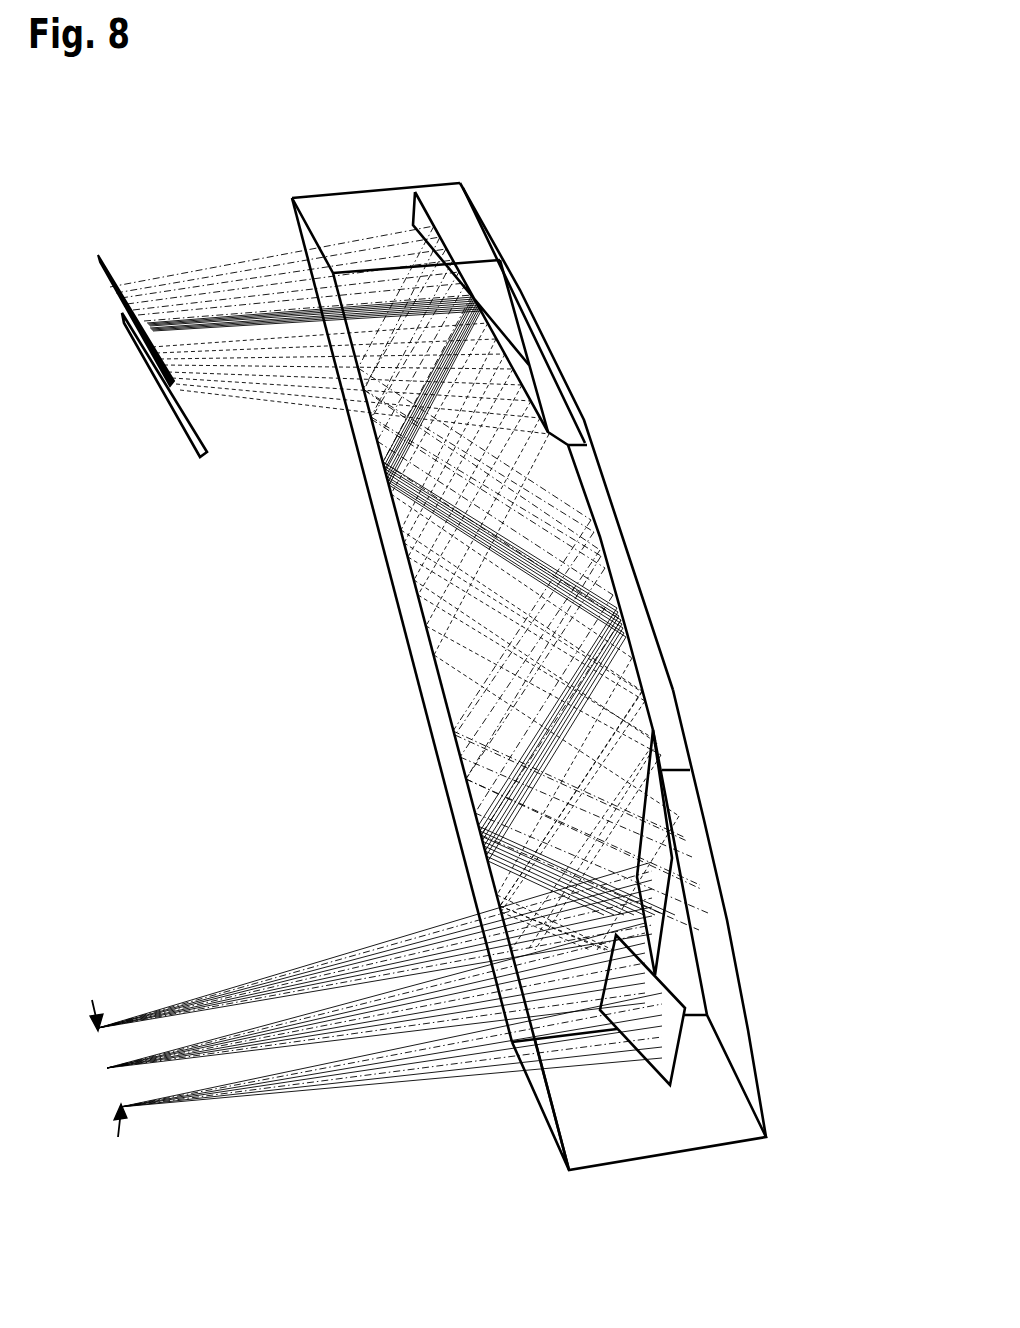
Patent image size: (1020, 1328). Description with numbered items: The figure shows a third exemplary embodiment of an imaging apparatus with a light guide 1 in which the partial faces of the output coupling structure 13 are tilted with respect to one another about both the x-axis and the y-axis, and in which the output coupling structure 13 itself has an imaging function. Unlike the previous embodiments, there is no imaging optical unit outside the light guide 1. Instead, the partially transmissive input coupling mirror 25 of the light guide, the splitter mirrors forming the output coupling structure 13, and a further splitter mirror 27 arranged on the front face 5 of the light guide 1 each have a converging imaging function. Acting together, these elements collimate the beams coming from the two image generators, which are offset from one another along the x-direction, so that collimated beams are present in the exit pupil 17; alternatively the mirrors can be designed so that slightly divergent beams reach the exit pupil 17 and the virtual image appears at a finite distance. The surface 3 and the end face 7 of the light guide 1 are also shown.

The light guide 1 is at (400, 588).
The front surface of light guide 3 is at (427, 678).
The front face 5 is at (688, 813).
The end face of light guide 7 is at (628, 1140).
The output coupling structure 13 is at (744, 960).
The exit pupil 17 is at (92, 1000).
The partially transmissive input coupling mirror 25 is at (487, 304).
The splitter mirror 27 is at (638, 577).